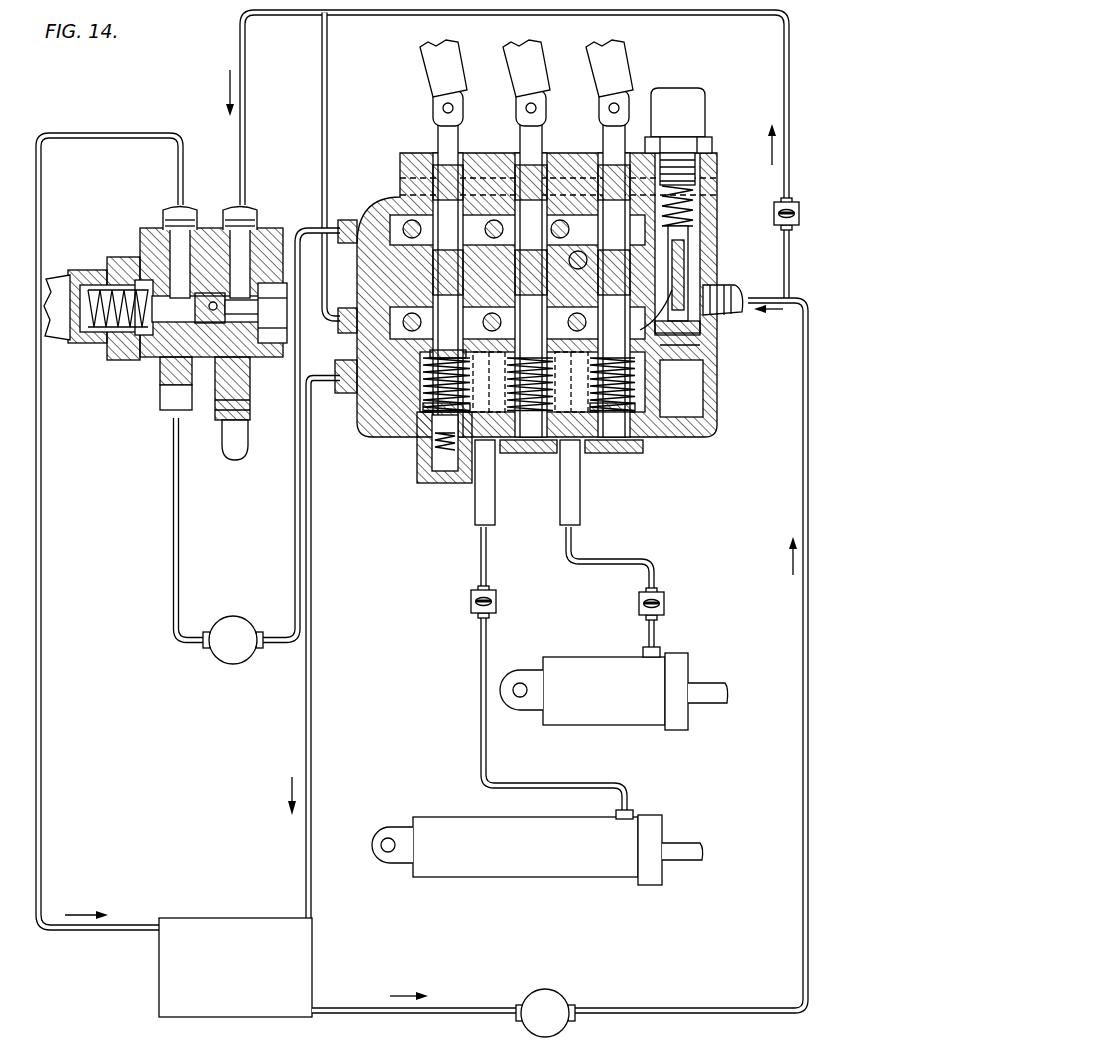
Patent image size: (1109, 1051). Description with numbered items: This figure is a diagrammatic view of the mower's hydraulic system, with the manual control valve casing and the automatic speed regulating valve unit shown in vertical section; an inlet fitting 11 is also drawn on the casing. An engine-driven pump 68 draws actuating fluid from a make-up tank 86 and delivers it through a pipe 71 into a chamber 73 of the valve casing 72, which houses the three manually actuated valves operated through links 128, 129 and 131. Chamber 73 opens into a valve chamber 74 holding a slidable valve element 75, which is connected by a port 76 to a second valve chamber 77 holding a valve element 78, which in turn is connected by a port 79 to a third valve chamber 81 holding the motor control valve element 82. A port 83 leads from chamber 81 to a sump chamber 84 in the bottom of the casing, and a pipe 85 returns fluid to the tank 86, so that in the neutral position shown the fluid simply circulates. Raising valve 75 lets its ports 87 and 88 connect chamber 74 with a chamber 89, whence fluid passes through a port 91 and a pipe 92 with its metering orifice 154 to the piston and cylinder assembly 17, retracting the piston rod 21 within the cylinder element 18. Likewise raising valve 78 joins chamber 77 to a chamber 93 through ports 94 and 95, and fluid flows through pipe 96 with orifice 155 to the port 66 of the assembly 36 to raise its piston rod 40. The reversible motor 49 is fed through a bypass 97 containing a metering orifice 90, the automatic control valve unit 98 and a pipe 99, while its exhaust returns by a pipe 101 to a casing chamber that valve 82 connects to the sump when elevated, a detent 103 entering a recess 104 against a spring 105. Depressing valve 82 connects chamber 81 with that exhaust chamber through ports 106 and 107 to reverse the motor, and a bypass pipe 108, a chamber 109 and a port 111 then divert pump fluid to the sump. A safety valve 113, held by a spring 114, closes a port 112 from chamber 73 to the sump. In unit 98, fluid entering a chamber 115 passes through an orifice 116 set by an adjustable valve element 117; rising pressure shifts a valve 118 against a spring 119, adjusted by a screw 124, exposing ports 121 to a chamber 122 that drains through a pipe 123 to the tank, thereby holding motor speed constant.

The pressure inlet port 11 is at (730, 306).
The piston and cylinder assembly 17 is at (620, 699).
The cylinder element 18 is at (568, 662).
The piston rod 21 is at (718, 684).
The piston and cylinder assembly 36 is at (495, 867).
The piston rod 40 is at (702, 850).
The motor 49 is at (232, 663).
The port 66 is at (630, 814).
The pump 68 is at (540, 1003).
The pipe 71 is at (803, 480).
The valve casing 72 is at (716, 395).
The chamber 73 is at (720, 279).
The valve chamber 74 is at (700, 350).
The valve element 75 is at (630, 370).
The port 76 is at (563, 256).
The second valve chamber 77 is at (566, 278).
The valve element 78 is at (489, 382).
The port 79 is at (488, 265).
The third valve chamber 81 is at (430, 285).
The valve element 82 is at (440, 195).
The port 83 is at (432, 270).
The sump chamber 84 is at (362, 418).
The pipe 85 is at (312, 583).
The make-up tank 86 is at (245, 973).
The port 87 is at (630, 386).
The port 88 is at (605, 315).
The chamber 89 is at (670, 340).
The metering orifice 90 is at (800, 210).
The port 91 is at (547, 382).
The pipe 92 is at (578, 523).
The chamber 93 is at (489, 382).
The port 94 is at (575, 382).
The port 95 is at (528, 318).
The pipe 96 is at (475, 528).
The bypass 97 is at (757, 17).
The automatic control valve unit 98 is at (131, 416).
The pipe 99 is at (175, 420).
The pipe 101 is at (293, 495).
The spring pressed detent 103 is at (460, 442).
The recess 104 is at (428, 452).
The spring 105 is at (425, 398).
The port 106 is at (428, 300).
The port 107 is at (470, 223).
The bypass pipe 108 is at (328, 57).
The chamber 109 is at (430, 352).
The port 111 is at (428, 368).
The port 112 is at (695, 250).
The valve 113 is at (690, 258).
The spring 114 is at (690, 206).
The chamber 115 is at (252, 256).
The orifice 116 is at (262, 360).
The stationary adjustable valve element 117 is at (236, 380).
The valve 118 is at (140, 350).
The spring 119 is at (115, 290).
The ports 121 is at (214, 320).
The chamber 122 is at (165, 250).
The pipe 123 is at (42, 578).
The adjusting screw 124 is at (82, 345).
The link 128 is at (616, 48).
The link 129 is at (526, 50).
The link 131 is at (452, 48).
The metering orifice 154 is at (665, 600).
The metering orifice 155 is at (470, 601).